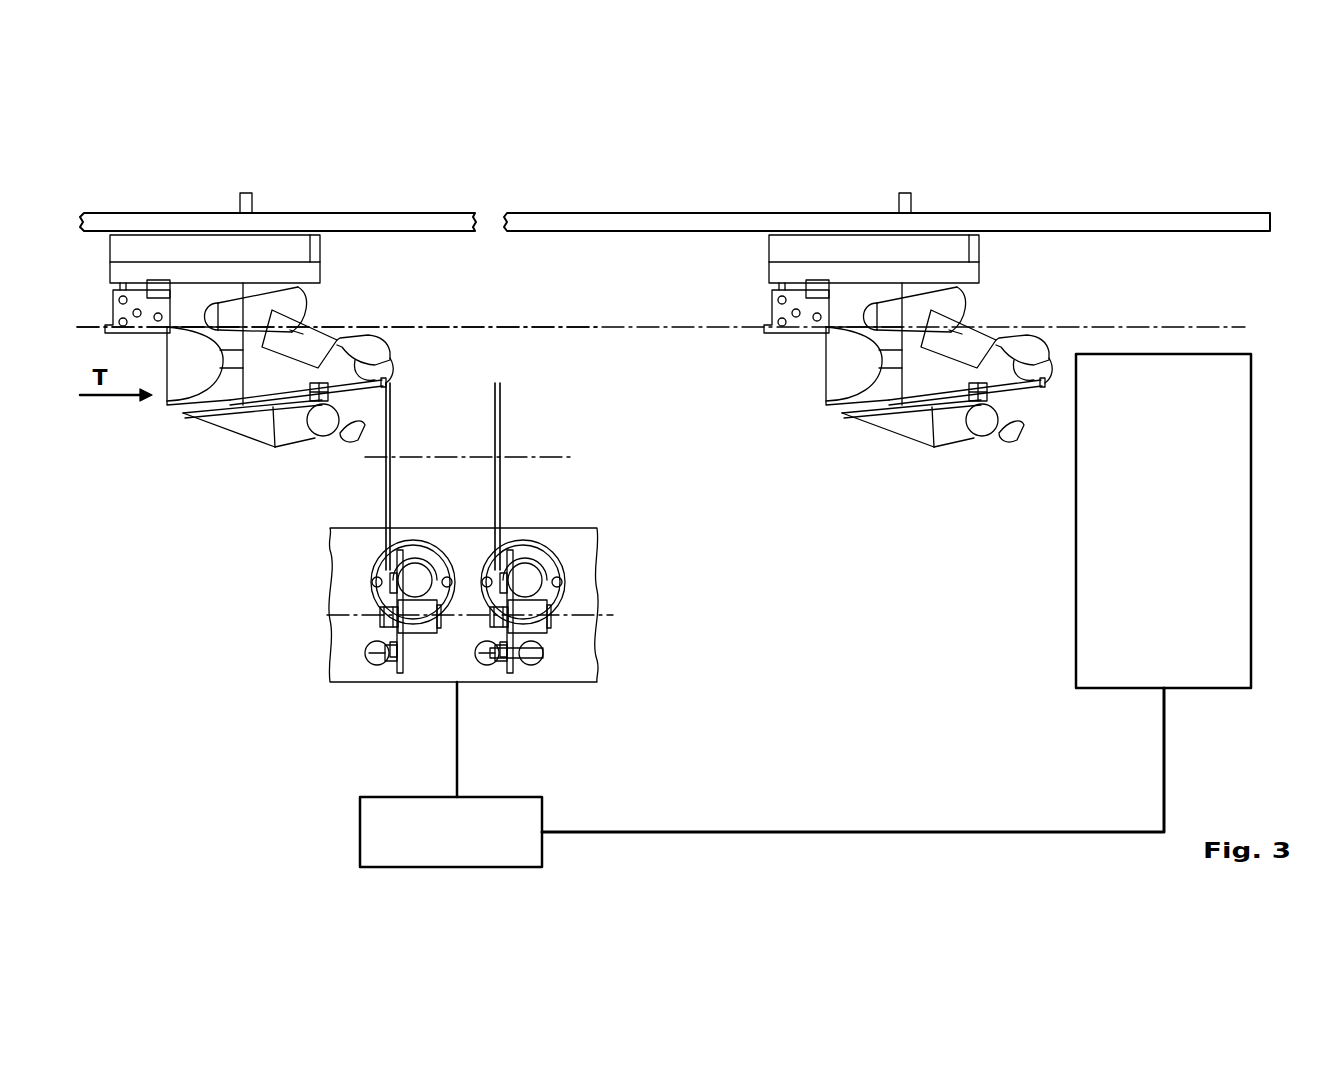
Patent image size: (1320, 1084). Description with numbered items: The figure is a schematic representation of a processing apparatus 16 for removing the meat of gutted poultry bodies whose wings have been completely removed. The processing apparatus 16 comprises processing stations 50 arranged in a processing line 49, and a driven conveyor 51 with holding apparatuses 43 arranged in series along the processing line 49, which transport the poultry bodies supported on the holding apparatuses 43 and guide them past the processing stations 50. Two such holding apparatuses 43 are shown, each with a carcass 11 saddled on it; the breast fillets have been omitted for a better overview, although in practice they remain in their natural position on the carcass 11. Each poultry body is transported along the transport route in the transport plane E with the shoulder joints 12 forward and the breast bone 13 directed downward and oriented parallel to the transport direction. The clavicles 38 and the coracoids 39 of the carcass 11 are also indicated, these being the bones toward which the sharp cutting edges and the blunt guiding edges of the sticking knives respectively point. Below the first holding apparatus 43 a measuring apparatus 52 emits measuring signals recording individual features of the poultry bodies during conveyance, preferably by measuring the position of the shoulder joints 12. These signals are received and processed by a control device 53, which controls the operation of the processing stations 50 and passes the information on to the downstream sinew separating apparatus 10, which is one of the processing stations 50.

The sinew separating apparatus 10 is at (1266, 572).
The carcass 11 is at (605, 368).
The shoulder joints 12 is at (382, 382).
The breast bone 13 is at (263, 430).
The processing apparatus 16 is at (675, 163).
The clavicles 38 is at (385, 388).
The coracoids 39 is at (366, 362).
The holding apparatus 43 is at (188, 298).
The processing line 49 is at (778, 197).
The processing stations 50 is at (173, 728).
The conveyor 51 is at (347, 223).
The measuring apparatus 52 is at (578, 512).
The control device 53 is at (533, 789).
The transport plane E is at (596, 325).